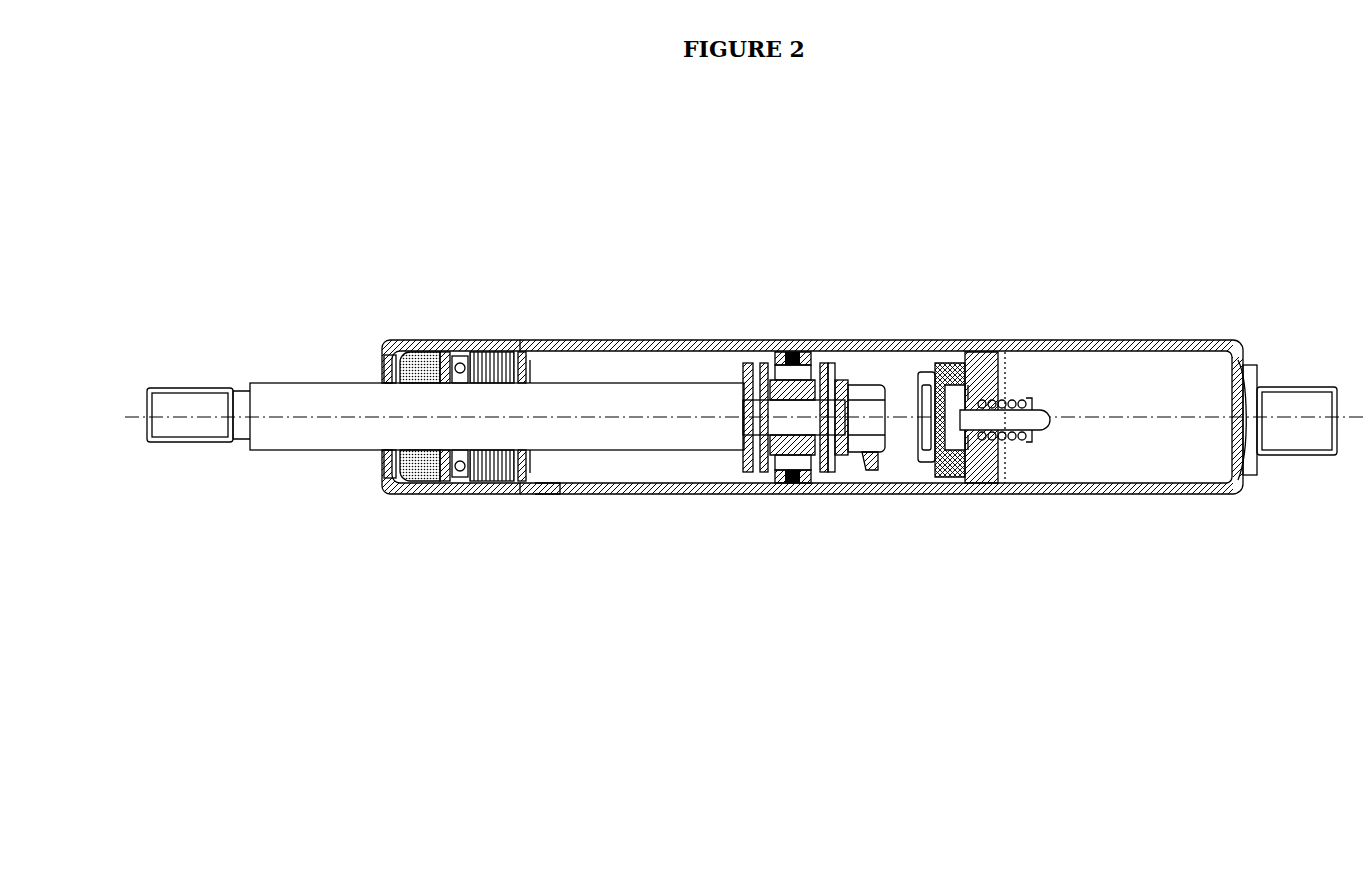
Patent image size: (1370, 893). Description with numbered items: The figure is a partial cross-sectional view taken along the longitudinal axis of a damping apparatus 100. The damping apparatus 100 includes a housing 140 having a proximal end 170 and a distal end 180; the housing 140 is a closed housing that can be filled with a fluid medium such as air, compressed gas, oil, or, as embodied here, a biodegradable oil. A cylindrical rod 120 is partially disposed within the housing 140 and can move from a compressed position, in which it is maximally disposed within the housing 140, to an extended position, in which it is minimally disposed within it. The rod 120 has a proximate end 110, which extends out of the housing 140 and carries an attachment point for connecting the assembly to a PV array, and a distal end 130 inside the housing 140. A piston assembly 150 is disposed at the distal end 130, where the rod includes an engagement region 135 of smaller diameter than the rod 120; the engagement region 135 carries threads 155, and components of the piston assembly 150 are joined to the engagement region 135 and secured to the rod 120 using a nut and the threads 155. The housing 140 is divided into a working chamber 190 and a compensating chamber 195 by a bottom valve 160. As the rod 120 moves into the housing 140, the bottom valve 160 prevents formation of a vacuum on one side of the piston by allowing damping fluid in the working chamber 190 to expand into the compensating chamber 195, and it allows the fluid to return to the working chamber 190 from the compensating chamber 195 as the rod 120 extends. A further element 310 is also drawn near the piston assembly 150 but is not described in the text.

The damping apparatus 100 is at (1079, 298).
The proximate end of the rod 110 is at (183, 447).
The rod 120 is at (303, 448).
The distal end of the rod 130 is at (736, 450).
The engagement region 135 is at (811, 428).
The housing 140 is at (556, 341).
The piston assembly 150 is at (808, 358).
The threads 155 is at (883, 398).
The bottom valve 160 is at (926, 358).
The proximal end of the housing 170 is at (368, 350).
The distal end of the housing 180 is at (1250, 345).
The working chamber 190 is at (562, 465).
The compensating chamber 195 is at (1102, 460).
The washer 310 is at (862, 455).